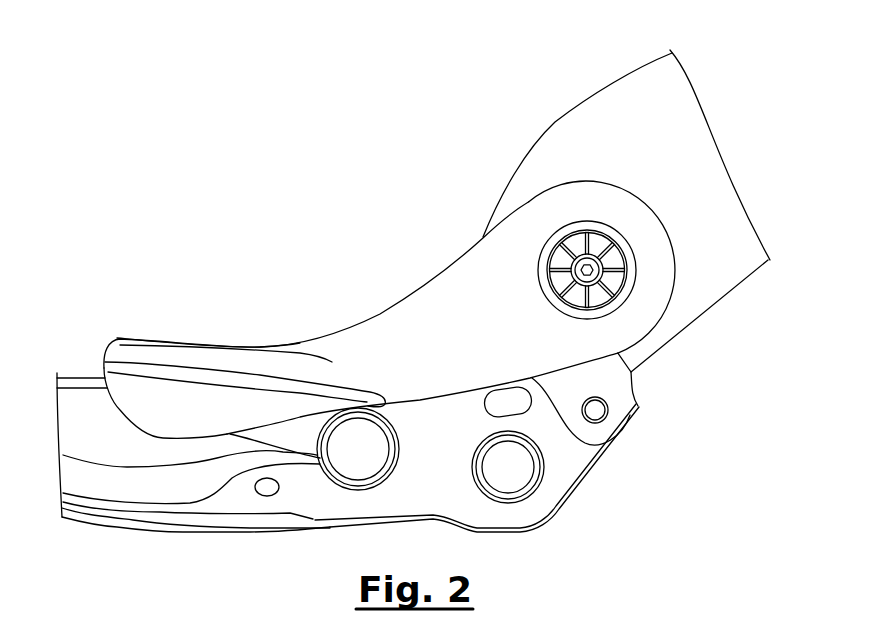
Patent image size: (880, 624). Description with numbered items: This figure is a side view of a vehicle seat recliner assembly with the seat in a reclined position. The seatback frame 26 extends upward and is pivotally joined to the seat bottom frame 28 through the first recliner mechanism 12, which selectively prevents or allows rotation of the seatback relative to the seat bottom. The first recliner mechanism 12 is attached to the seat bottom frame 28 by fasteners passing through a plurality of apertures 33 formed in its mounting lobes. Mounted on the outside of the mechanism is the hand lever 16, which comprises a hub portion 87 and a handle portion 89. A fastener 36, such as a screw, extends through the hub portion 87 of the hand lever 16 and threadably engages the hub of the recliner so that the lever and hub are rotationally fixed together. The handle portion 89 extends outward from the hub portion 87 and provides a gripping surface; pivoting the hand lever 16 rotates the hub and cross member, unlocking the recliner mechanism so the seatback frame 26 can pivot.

The first recliner mechanism 12 is at (603, 445).
The hand lever 16 is at (380, 312).
The seatback frame 26 is at (662, 117).
The seat bottom frame 28 is at (177, 510).
The apertures 33 is at (608, 410).
The fastener 36 is at (581, 270).
The hub portion 87 is at (658, 252).
The handle portion 89 is at (183, 348).